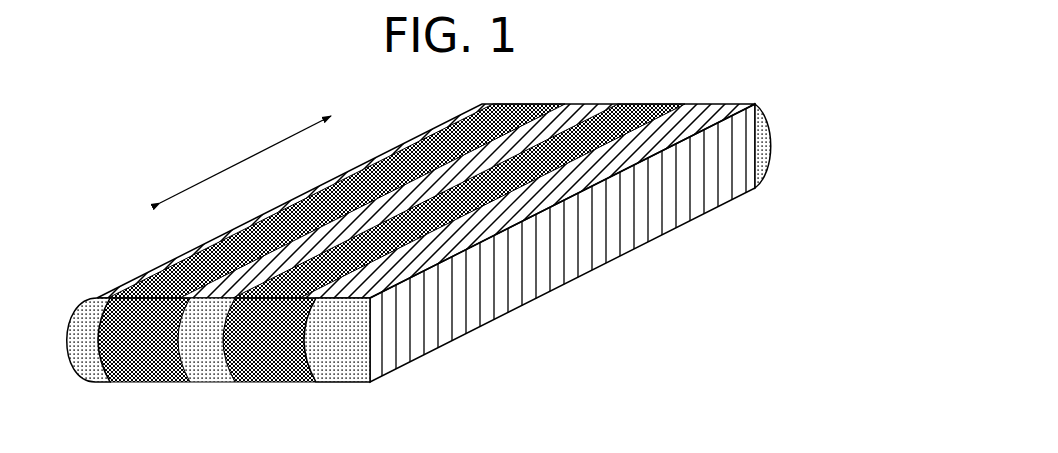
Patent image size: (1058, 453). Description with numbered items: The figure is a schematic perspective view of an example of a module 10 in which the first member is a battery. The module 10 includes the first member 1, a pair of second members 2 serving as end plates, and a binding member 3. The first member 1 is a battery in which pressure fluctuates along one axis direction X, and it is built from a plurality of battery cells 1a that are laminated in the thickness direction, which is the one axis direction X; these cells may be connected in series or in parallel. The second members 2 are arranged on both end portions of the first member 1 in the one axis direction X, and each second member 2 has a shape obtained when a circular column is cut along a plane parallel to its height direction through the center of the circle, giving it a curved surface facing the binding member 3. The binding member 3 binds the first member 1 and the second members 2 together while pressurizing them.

The module 10 is at (417, 228).
The first member 1 is at (417, 243).
The battery cells 1a is at (407, 358).
The second members 2 is at (452, 424).
The binding member 3 is at (538, 104).